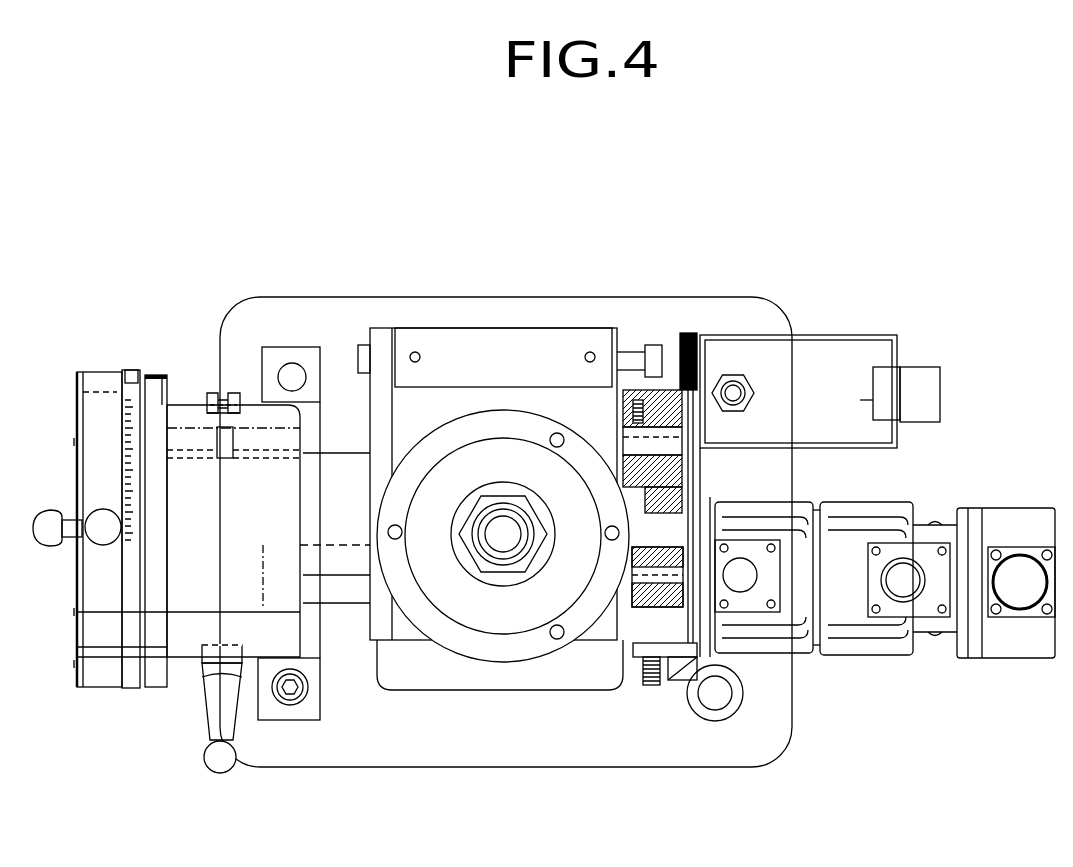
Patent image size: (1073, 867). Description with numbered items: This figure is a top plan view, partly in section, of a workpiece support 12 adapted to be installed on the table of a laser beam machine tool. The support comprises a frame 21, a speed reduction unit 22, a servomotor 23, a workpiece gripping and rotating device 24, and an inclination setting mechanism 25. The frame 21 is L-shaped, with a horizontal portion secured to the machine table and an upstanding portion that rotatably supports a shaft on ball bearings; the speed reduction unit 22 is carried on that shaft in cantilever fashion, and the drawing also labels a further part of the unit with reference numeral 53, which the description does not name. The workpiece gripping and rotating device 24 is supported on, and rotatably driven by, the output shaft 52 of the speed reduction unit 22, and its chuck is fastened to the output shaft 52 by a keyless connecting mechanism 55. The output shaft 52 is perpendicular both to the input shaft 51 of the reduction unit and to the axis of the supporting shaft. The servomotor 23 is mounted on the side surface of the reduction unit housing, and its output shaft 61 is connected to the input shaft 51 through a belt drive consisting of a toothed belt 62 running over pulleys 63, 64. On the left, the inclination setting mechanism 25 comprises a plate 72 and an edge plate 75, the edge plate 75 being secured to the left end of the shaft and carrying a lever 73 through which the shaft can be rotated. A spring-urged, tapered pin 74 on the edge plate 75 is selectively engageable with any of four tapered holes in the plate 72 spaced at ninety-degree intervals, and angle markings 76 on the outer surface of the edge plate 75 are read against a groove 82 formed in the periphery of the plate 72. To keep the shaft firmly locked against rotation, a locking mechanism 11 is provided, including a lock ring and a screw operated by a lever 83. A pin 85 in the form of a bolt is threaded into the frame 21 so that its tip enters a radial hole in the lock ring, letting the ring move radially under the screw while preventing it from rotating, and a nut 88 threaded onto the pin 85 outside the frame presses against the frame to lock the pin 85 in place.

The locking mechanism 11 is at (200, 687).
The workpiece support 12 is at (378, 284).
The frame 21 is at (305, 769).
The speed reduction unit 22 is at (541, 326).
The servomotor 23 is at (820, 500).
The workpiece gripping and rotating device 24 is at (457, 652).
The inclination setting mechanism 25 is at (97, 370).
The input shaft 51 is at (617, 426).
The output shaft 52 is at (500, 515).
The carriage block 53 is at (436, 326).
The keyless connecting mechanism 55 is at (473, 572).
The output shaft 61 is at (607, 600).
The toothed belt 62 is at (752, 527).
The pulley 63 is at (733, 673).
The pulley 64 is at (688, 483).
The plate 72 is at (162, 375).
The lever 73 is at (100, 546).
The pin 74 is at (52, 515).
The edge plate 75 is at (78, 370).
The angle markings 76 is at (134, 370).
The groove 82 is at (168, 528).
The lever 83 is at (222, 774).
The pin 85 is at (230, 394).
The nut 88 is at (206, 388).